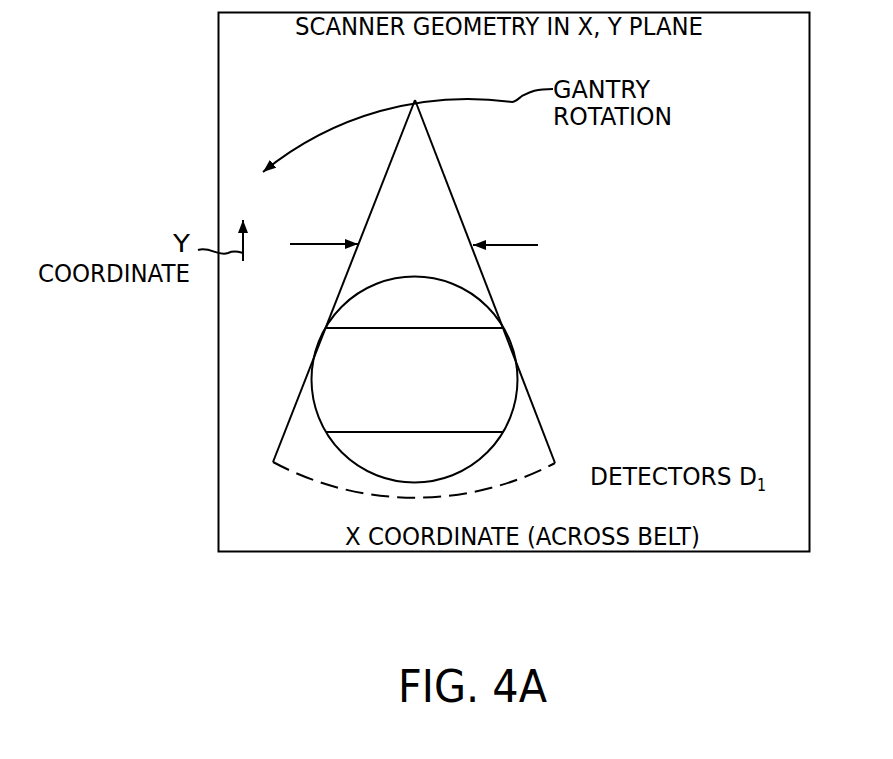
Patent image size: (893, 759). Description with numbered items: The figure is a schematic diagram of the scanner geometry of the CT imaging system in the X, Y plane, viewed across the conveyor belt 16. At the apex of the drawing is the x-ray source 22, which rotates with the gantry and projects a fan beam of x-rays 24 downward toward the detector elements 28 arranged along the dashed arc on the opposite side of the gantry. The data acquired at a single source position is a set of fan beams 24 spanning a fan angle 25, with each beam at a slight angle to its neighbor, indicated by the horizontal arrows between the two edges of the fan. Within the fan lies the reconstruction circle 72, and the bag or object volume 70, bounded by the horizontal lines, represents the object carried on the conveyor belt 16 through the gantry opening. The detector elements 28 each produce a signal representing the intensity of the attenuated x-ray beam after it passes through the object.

The x-ray source 22 is at (425, 104).
The fan beam of x-rays 24 is at (376, 193).
The fan angle 25 is at (517, 244).
The reconstruction circle 72 is at (499, 312).
The conveyor belt 16 is at (523, 411).
The bag or object volume 70 is at (479, 426).
The detector elements 28 is at (767, 480).